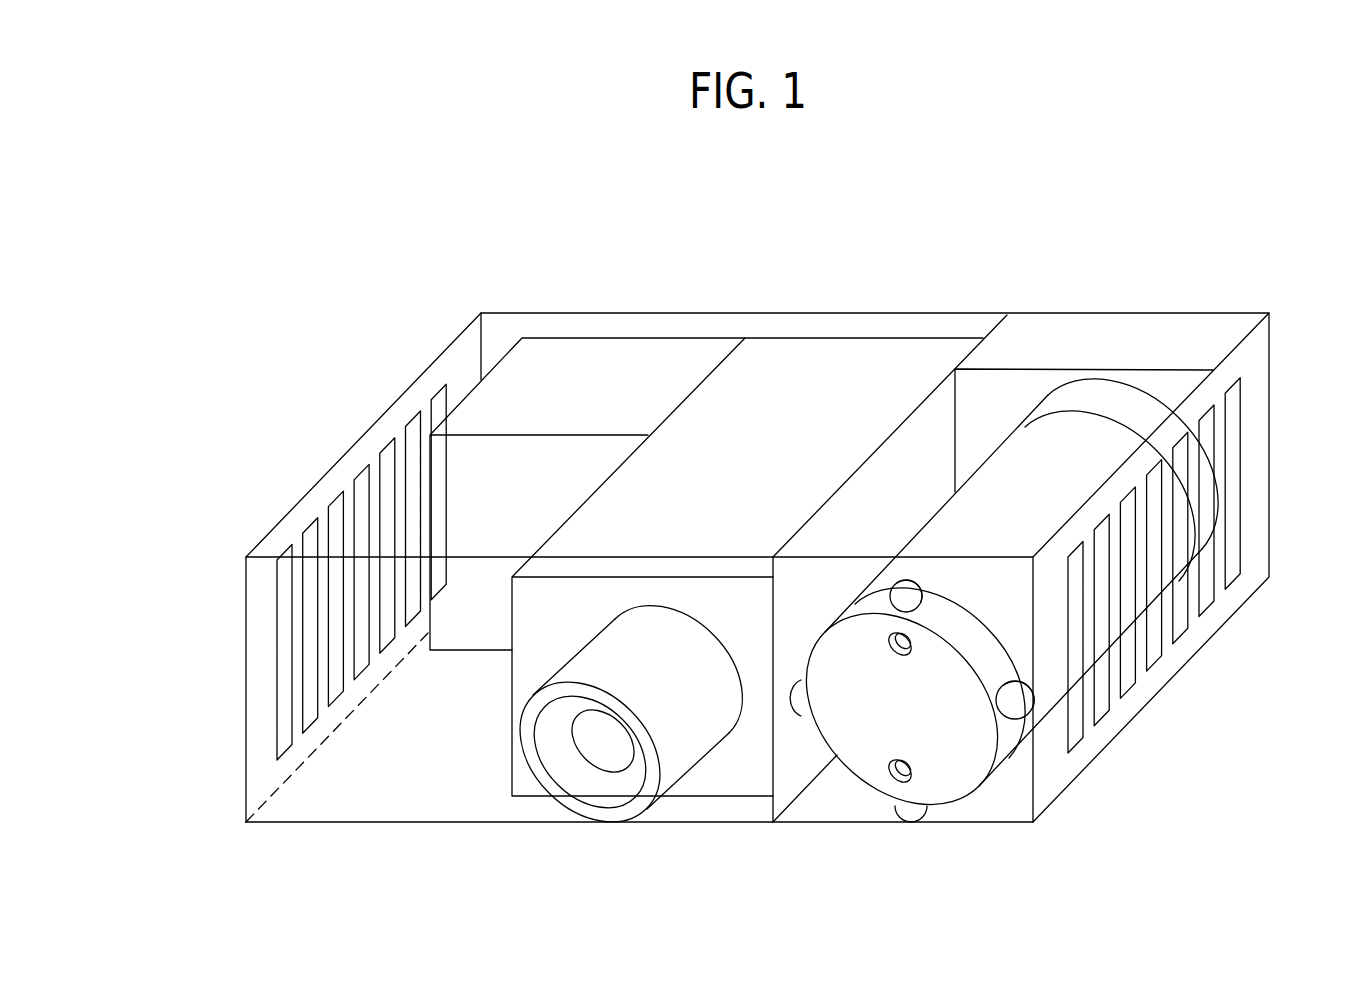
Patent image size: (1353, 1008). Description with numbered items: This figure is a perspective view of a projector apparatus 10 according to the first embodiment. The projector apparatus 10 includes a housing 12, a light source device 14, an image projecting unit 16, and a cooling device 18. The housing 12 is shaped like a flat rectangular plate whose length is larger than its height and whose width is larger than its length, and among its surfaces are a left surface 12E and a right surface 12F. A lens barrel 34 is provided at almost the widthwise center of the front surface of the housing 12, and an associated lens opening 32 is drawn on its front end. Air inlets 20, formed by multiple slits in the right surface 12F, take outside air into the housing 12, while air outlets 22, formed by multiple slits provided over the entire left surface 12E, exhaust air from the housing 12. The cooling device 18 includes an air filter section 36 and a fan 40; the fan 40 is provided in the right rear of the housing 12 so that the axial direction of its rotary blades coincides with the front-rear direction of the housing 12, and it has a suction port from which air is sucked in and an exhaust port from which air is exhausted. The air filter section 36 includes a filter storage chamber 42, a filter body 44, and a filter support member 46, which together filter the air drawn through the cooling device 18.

The projector apparatus 10 is at (837, 214).
The housing 12 is at (652, 313).
The left surface 12E is at (246, 786).
The right surface 12F is at (1097, 741).
The light source device 14 is at (576, 366).
The image projecting unit 16 is at (793, 391).
The cooling device 18 is at (1197, 281).
The air inlets 20 is at (1233, 571).
The air outlets 22 is at (313, 708).
The lens opening 32 is at (600, 748).
The lens barrel 34 is at (672, 761).
The air filter section 36 is at (932, 426).
The fan 40 is at (1222, 318).
The filter storage chamber 42 is at (823, 806).
The filter body 44 is at (1025, 450).
The filter support member 46 is at (950, 778).